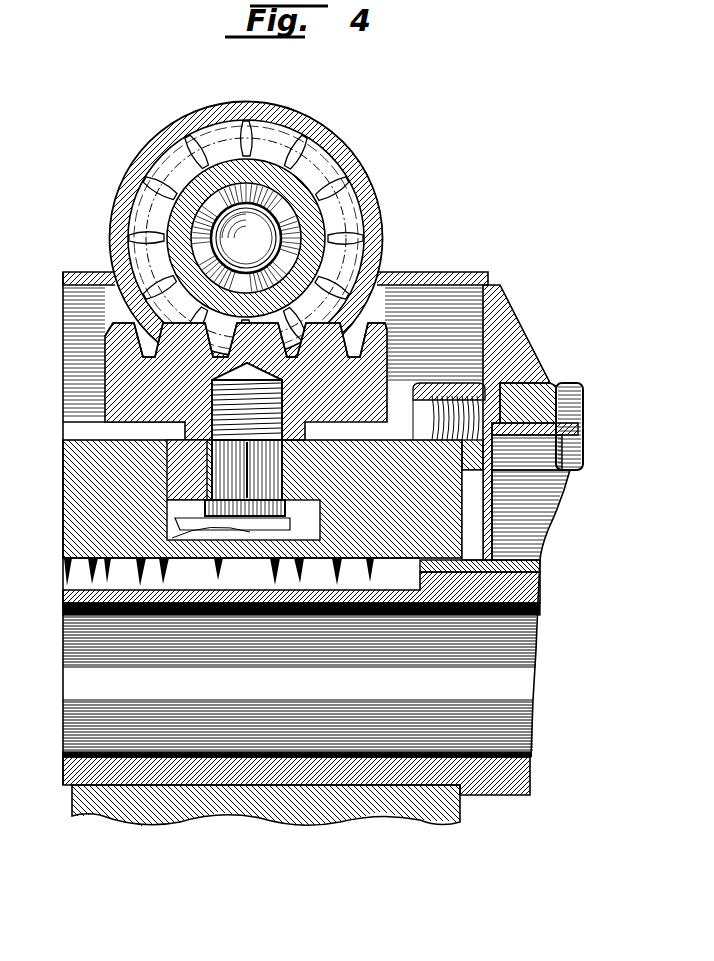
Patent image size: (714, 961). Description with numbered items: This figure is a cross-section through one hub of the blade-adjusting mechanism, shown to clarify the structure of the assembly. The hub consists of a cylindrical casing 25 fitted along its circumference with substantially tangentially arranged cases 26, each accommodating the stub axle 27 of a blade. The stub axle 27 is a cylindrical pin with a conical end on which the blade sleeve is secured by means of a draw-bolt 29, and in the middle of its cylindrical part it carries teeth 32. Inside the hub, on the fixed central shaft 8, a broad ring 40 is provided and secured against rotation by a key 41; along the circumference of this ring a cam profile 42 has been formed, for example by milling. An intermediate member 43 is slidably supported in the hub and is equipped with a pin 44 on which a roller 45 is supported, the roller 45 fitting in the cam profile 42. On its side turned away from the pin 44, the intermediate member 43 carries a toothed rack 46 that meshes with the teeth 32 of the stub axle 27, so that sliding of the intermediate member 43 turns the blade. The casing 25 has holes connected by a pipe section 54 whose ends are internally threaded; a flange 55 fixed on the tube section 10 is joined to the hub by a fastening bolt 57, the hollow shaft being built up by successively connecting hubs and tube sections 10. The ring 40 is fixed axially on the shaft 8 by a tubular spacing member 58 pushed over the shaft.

The fixed central shaft 8 is at (518, 588).
The tube section 10 is at (578, 430).
The cylindrical casing 25 is at (418, 285).
The case 26 is at (323, 139).
The stub axle 27 is at (167, 232).
The draw-bolt 29 is at (313, 238).
The teeth 32 is at (323, 180).
The broad ring 40 is at (540, 540).
The key 41 is at (110, 577).
The cam profile 42 is at (190, 515).
The intermediate member 43 is at (148, 402).
The pin 44 is at (232, 477).
The roller 45 is at (180, 457).
The toothed rack 46 is at (123, 342).
The pipe section 54 is at (472, 470).
The flange 55 is at (525, 320).
The fastening bolt 57 is at (570, 406).
The tubular spacing member 58 is at (527, 568).